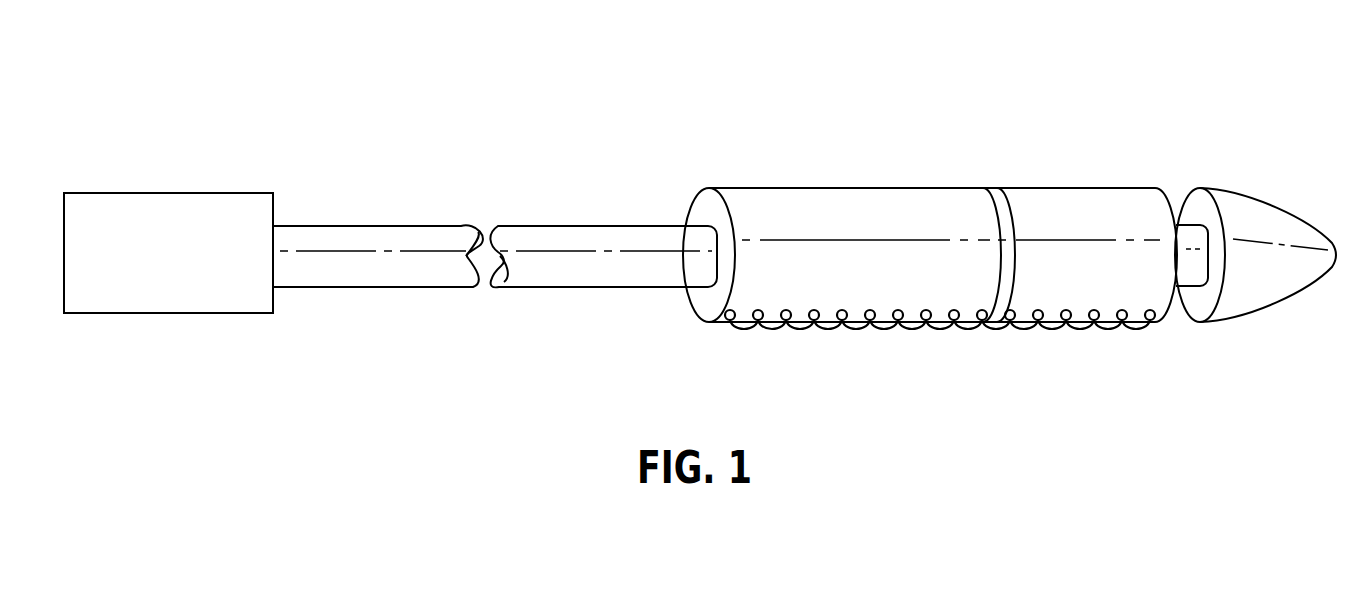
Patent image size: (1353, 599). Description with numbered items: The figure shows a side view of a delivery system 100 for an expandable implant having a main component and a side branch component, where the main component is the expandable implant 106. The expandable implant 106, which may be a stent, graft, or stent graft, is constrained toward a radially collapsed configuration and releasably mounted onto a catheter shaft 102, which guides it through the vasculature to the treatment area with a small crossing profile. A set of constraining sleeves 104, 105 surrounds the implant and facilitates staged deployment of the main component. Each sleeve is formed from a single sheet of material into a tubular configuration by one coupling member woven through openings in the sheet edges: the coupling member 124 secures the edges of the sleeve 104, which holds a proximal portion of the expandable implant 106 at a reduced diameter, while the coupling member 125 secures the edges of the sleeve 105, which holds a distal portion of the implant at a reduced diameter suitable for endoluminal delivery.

The delivery system 100 is at (700, 225).
The catheter shaft 102 is at (361, 229).
The sleeve 104 is at (844, 196).
The sleeve 105 is at (1121, 196).
The expandable implant 106 is at (1010, 197).
The coupling member 124 is at (883, 331).
The coupling member 125 is at (1077, 331).